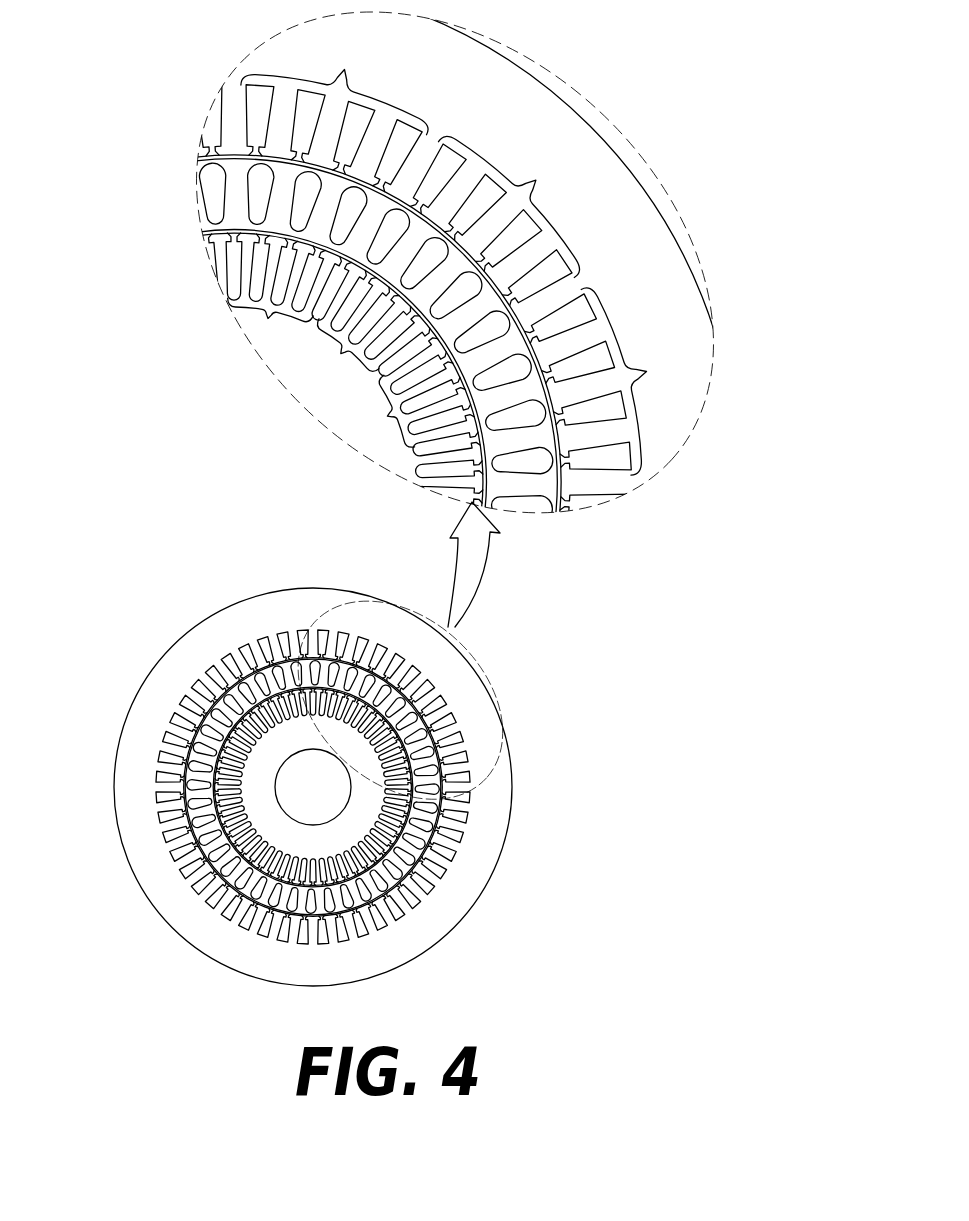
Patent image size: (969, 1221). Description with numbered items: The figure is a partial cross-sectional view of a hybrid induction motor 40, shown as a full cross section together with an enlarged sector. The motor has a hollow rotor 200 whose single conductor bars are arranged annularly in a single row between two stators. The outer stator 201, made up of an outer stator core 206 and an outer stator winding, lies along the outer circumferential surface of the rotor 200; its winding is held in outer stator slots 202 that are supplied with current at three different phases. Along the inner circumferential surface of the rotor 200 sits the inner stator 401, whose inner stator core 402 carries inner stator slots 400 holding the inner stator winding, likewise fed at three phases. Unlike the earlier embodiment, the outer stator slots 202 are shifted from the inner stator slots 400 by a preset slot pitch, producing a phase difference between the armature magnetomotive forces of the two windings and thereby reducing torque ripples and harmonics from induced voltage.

The hybrid induction motor 40 is at (125, 507).
The outer stator 201 is at (368, 492).
The outer stator core 206 is at (265, 58).
The outer stator slot 202 is at (426, 306).
The rotor 200 is at (315, 451).
The inner stator 401 is at (247, 474).
The inner stator slot 400 is at (305, 381).
The inner stator core 402 is at (235, 308).